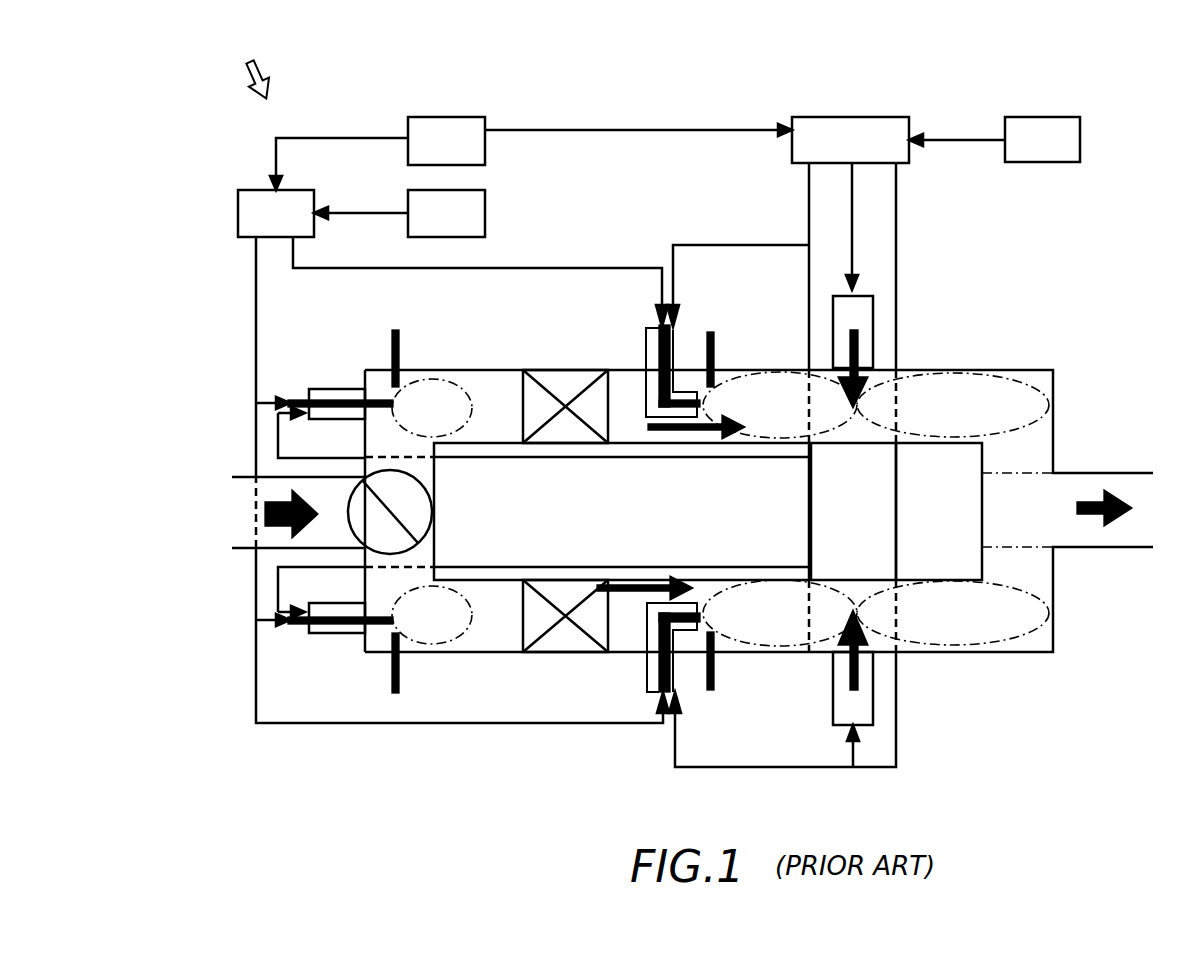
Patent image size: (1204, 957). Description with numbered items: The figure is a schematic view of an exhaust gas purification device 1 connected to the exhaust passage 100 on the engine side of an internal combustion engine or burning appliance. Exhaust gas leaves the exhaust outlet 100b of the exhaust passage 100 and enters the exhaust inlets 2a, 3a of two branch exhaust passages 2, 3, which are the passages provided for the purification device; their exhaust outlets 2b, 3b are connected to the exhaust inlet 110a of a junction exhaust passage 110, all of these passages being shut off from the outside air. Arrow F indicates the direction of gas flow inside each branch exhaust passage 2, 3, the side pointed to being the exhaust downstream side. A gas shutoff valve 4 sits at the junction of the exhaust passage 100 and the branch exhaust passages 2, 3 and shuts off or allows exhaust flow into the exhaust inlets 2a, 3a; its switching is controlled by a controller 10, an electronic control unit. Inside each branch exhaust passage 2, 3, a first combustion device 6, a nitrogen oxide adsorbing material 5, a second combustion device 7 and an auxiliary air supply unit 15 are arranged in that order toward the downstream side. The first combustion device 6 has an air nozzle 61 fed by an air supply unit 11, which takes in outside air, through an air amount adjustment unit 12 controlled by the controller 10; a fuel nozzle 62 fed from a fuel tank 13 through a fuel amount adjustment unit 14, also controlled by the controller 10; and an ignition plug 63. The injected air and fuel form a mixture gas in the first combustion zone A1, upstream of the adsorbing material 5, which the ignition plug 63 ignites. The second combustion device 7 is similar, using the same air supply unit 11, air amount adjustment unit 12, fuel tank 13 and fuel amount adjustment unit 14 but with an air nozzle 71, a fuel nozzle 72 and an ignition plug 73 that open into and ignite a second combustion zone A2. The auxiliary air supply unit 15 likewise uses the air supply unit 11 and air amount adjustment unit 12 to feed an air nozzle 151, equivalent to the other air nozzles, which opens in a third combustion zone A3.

The exhaust gas purification device 1 is at (257, 64).
The branch exhaust passage 2 is at (797, 365).
The branch exhaust passage 3 is at (813, 653).
The exhaust inlet 2a is at (417, 472).
The exhaust outlet 2b is at (1020, 473).
The exhaust inlet 3a is at (412, 553).
The exhaust outlet 3b is at (1010, 547).
The gas shutoff valve 4 is at (425, 525).
The nitrogen oxide adsorbing material 5 is at (583, 372).
The first combustion device 6 is at (340, 337).
The air nozzle 61 is at (347, 392).
The fuel nozzle 62 is at (335, 393).
The ignition plug 63 is at (393, 358).
The second combustion device 7 is at (685, 293).
The air nozzle 71 is at (678, 348).
The fuel nozzle 72 is at (660, 330).
The ignition plug 73 is at (713, 357).
The controller 10 is at (452, 117).
The air supply unit 11 is at (1054, 122).
The air amount adjustment unit 12 is at (851, 117).
The fuel tank 13 is at (485, 219).
The fuel amount adjustment unit 14 is at (242, 215).
The auxiliary air supply unit 15 is at (883, 315).
The air nozzle 151 is at (873, 353).
The exhaust passage 100 is at (330, 468).
The exhaust outlet 100b is at (343, 527).
The junction exhaust passage 110 is at (1138, 468).
The exhaust inlet 110a is at (998, 497).
The first combustion zone A1 is at (422, 378).
The second combustion zone A2 is at (835, 435).
The third combustion zone A3 is at (1013, 378).
The arrow indicating gas flow direction F is at (680, 430).